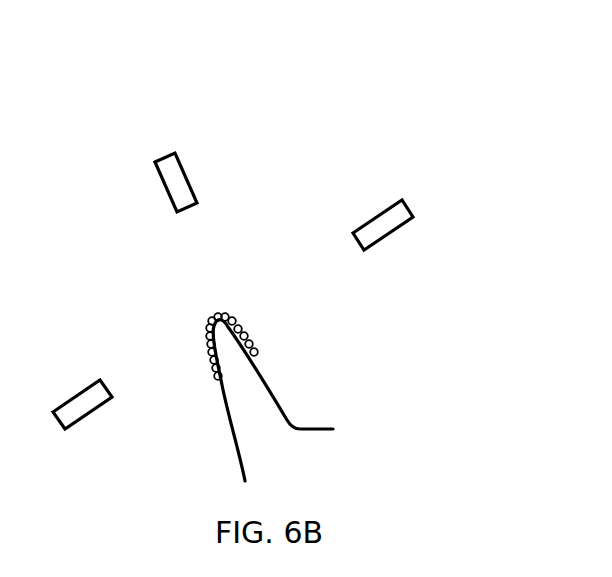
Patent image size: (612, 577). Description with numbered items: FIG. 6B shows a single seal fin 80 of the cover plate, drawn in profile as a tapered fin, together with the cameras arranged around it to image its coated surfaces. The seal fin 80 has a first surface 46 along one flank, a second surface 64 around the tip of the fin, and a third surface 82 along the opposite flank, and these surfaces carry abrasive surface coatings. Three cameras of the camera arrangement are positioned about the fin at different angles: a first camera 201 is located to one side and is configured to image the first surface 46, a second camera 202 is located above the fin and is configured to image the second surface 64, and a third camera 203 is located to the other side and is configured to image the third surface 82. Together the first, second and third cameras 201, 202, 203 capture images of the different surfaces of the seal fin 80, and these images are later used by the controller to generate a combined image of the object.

The second camera 202 is at (190, 180).
The third camera 203 is at (378, 213).
The first camera 201 is at (90, 417).
The third surface 82 is at (299, 357).
The second surface 64 is at (203, 308).
The first surface 46 is at (212, 403).
The seal fin 80 is at (408, 255).